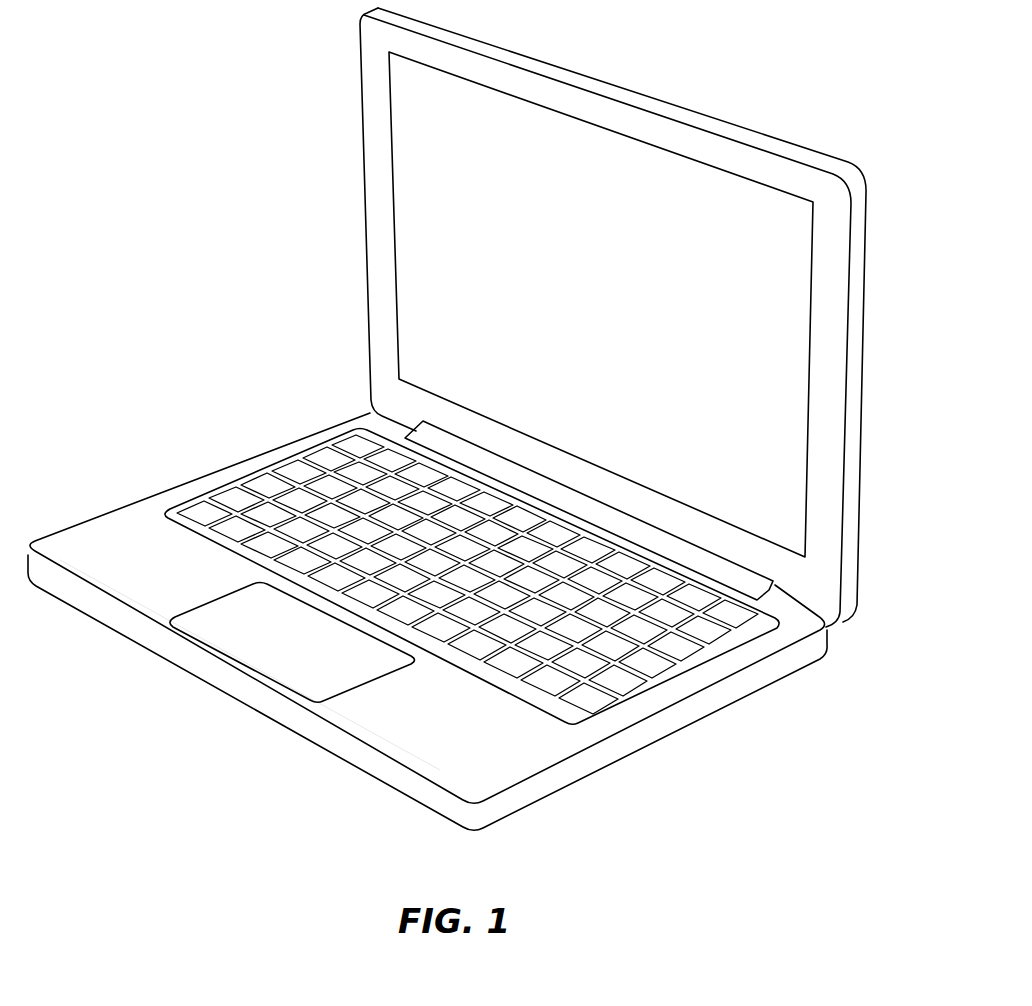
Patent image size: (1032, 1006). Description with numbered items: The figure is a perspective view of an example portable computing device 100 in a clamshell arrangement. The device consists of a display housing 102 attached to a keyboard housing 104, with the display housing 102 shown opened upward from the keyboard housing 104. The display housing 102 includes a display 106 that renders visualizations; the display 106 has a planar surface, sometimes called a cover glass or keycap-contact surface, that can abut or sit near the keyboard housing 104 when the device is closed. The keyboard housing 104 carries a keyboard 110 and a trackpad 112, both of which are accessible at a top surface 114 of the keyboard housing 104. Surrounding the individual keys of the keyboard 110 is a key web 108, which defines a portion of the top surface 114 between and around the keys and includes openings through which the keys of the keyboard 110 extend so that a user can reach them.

The computing device 100 is at (240, 322).
The display housing 102 is at (850, 412).
The keyboard housing 104 is at (578, 765).
The display 106 is at (587, 163).
The key web 108 is at (165, 512).
The keyboard 110 is at (234, 497).
The trackpad 112 is at (268, 642).
The top surface 114 is at (398, 732).